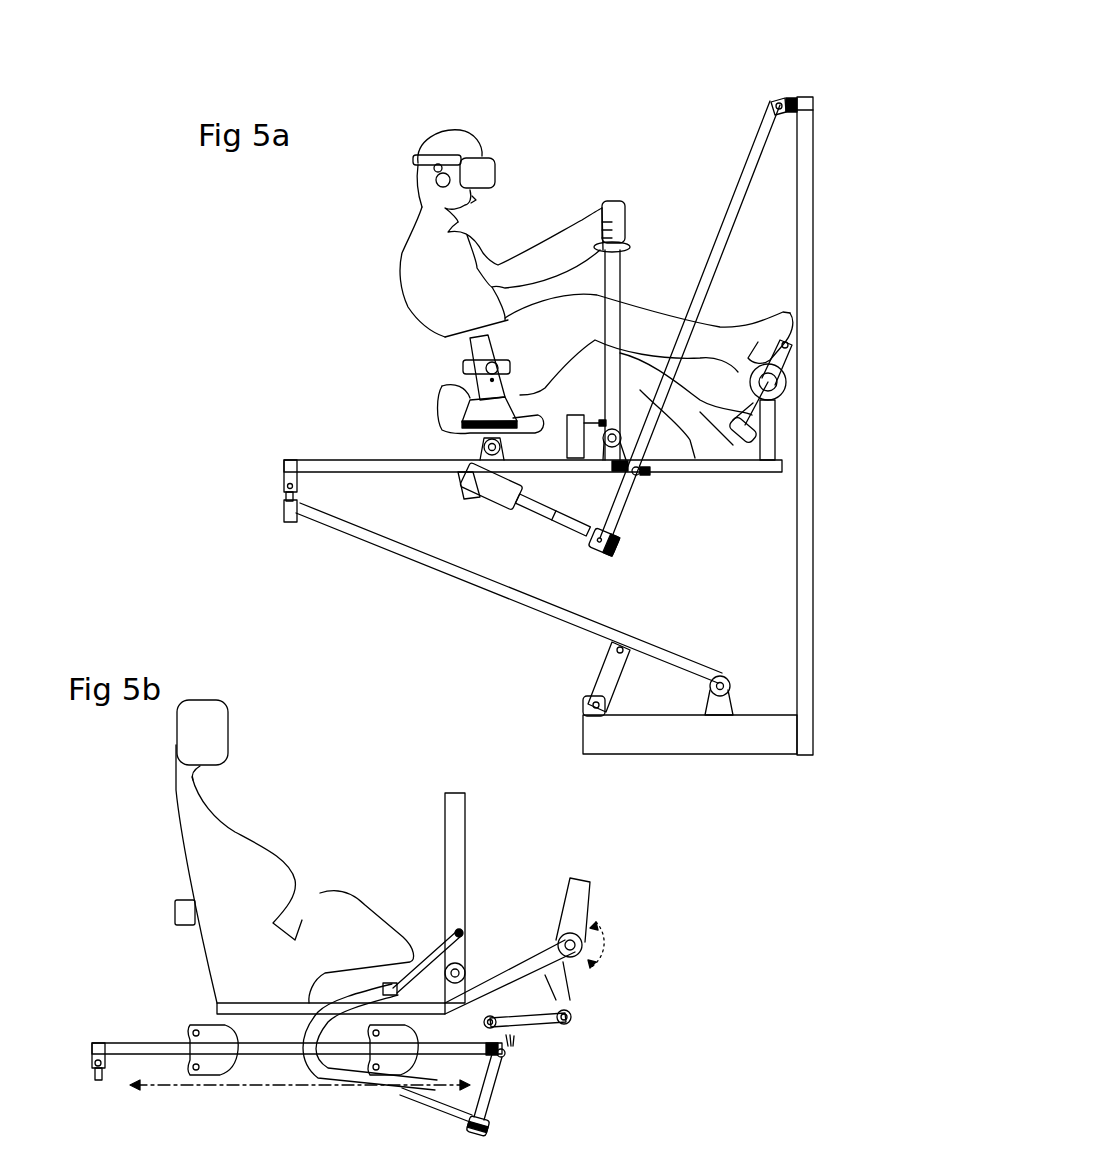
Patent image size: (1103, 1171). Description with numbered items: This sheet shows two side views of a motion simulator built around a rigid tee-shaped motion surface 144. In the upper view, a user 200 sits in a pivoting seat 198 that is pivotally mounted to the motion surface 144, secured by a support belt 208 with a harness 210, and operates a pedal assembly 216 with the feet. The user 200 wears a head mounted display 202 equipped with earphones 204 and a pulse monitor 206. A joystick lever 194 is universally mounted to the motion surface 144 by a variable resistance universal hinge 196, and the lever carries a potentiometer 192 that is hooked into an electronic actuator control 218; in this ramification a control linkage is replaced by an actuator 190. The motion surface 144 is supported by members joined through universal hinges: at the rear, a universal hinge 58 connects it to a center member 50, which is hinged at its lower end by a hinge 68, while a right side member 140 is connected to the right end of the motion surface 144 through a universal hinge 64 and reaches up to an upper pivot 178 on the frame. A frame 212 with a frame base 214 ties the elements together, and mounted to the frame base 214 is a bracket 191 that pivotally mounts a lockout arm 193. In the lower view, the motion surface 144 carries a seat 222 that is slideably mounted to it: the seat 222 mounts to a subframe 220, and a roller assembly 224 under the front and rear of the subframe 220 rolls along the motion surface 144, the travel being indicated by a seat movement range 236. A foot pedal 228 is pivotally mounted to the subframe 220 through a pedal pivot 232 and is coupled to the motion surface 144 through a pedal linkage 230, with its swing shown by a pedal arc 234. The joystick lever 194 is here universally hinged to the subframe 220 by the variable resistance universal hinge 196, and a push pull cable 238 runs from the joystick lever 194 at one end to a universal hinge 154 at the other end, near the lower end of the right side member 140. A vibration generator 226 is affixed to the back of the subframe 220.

In FIG. 5A, the center member 50 is at (528, 622).
In FIG. 5A, the universal hinge 58 is at (278, 494).
In FIG. 5B, the universal hinge 58 is at (88, 1065).
In FIG. 5A, the universal hinge 64 is at (652, 480).
In FIG. 5B, the universal hinge 64 is at (528, 1059).
In FIG. 5A, the hinge 68 is at (728, 675).
In FIG. 5A, the right side member 140 is at (733, 182).
In FIG. 5B, the right side member 140 is at (505, 1098).
In FIG. 5A, the motion surface 144 is at (352, 457).
In FIG. 5B, the motion surface 144 is at (112, 1040).
In FIG. 5A, the universal hinge 154 is at (632, 550).
In FIG. 5B, the universal hinge 154 is at (490, 1128).
In FIG. 5A, the upper pivot 178 is at (778, 97).
In FIG. 5A, the actuator 190 is at (540, 528).
In FIG. 5A, the bracket 191 is at (585, 702).
In FIG. 5A, the potentiometer 192 is at (592, 418).
In FIG. 5A, the lockout arm 193 is at (592, 665).
In FIG. 5A, the joystick lever 194 is at (628, 276).
In FIG. 5B, the joystick lever 194 is at (470, 842).
In FIG. 5A, the variable resistance universal hinge 196 is at (605, 455).
In FIG. 5B, the variable resistance universal hinge 196 is at (475, 972).
In FIG. 5A, the pivoting seat 198 is at (437, 404).
In FIG. 5A, the user 200 is at (390, 272).
In FIG. 5A, the head mounted display 202 is at (502, 156).
In FIG. 5A, the earphones 204 is at (430, 176).
In FIG. 5A, the pulse monitor 206 is at (433, 192).
In FIG. 5A, the support belt 208 is at (468, 345).
In FIG. 5A, the harness 210 is at (462, 371).
In FIG. 5A, the frame 212 is at (818, 250).
In FIG. 5A, the frame base 214 is at (752, 754).
In FIG. 5A, the pedal assembly 216 is at (790, 378).
In FIG. 5A, the electronic actuator control 218 is at (565, 446).
In FIG. 5B, the subframe 220 is at (215, 1008).
In FIG. 5B, the seat 222 is at (163, 761).
In FIG. 5B, the roller assembly 224 is at (195, 1077).
In FIG. 5B, the vibration generator 226 is at (170, 907).
In FIG. 5B, the foot pedal 228 is at (597, 884).
In FIG. 5B, the pedal linkage 230 is at (530, 1027).
In FIG. 5B, the pedal pivot 232 is at (590, 946).
In FIG. 5B, the pedal arc 234 is at (597, 967).
In FIG. 5B, the seat movement range 236 is at (265, 1092).
In FIG. 5B, the push pull cable 238 is at (322, 1084).